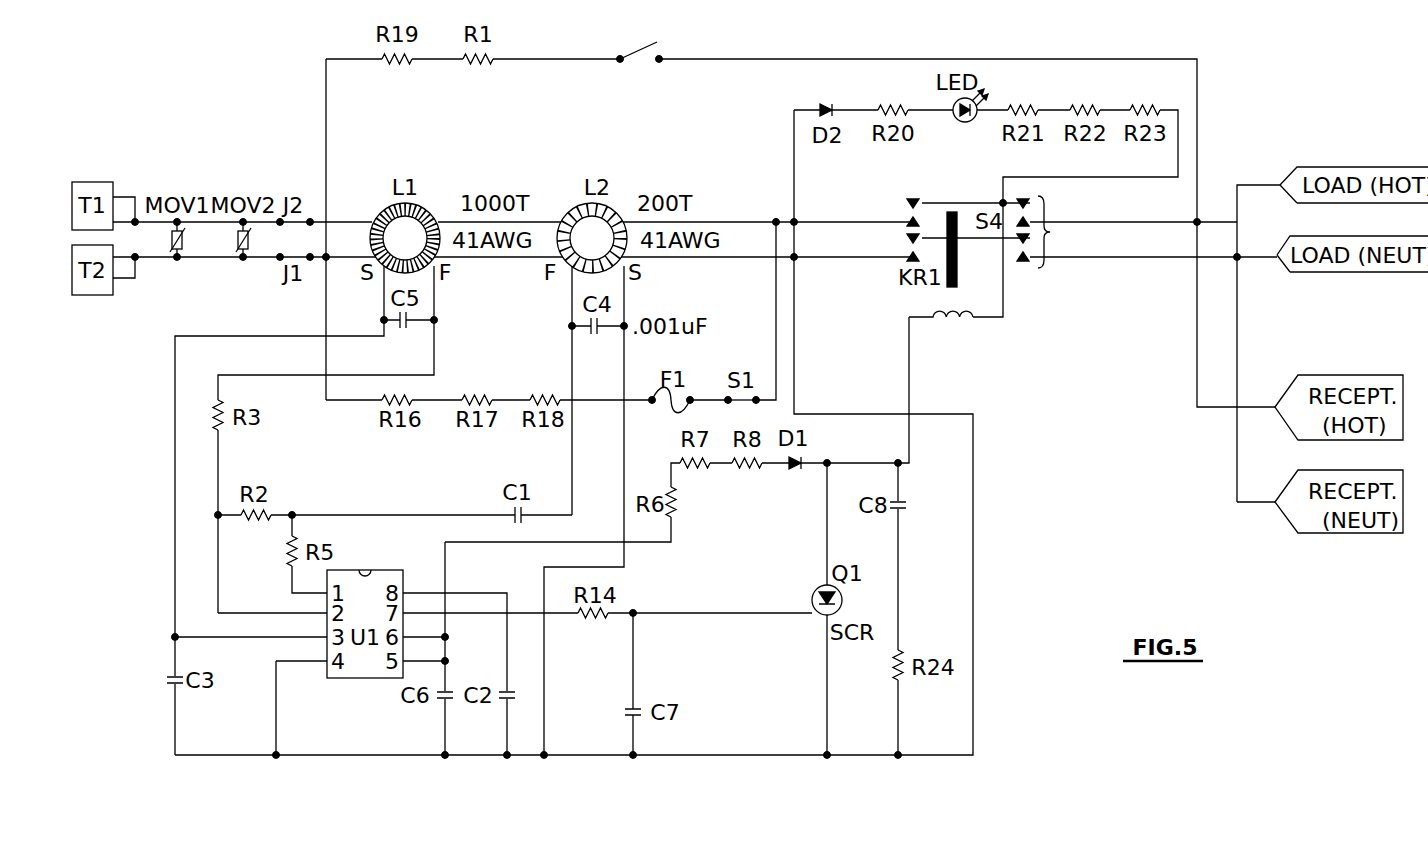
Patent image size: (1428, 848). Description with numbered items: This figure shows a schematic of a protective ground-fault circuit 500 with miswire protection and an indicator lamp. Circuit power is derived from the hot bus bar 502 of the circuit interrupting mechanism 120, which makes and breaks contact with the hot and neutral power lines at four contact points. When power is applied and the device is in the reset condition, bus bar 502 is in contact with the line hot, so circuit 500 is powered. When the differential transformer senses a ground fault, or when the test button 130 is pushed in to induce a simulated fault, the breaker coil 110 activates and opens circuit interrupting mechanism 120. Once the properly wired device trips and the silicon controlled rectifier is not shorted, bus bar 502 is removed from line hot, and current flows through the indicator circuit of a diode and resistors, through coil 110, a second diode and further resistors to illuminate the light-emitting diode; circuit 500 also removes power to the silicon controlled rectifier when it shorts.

The breaker coil 110 is at (953, 320).
The circuit interrupting mechanism 120 is at (1050, 233).
The test button 130 is at (638, 44).
The circuit 500 is at (985, 536).
The hot bus bar 502 is at (968, 198).